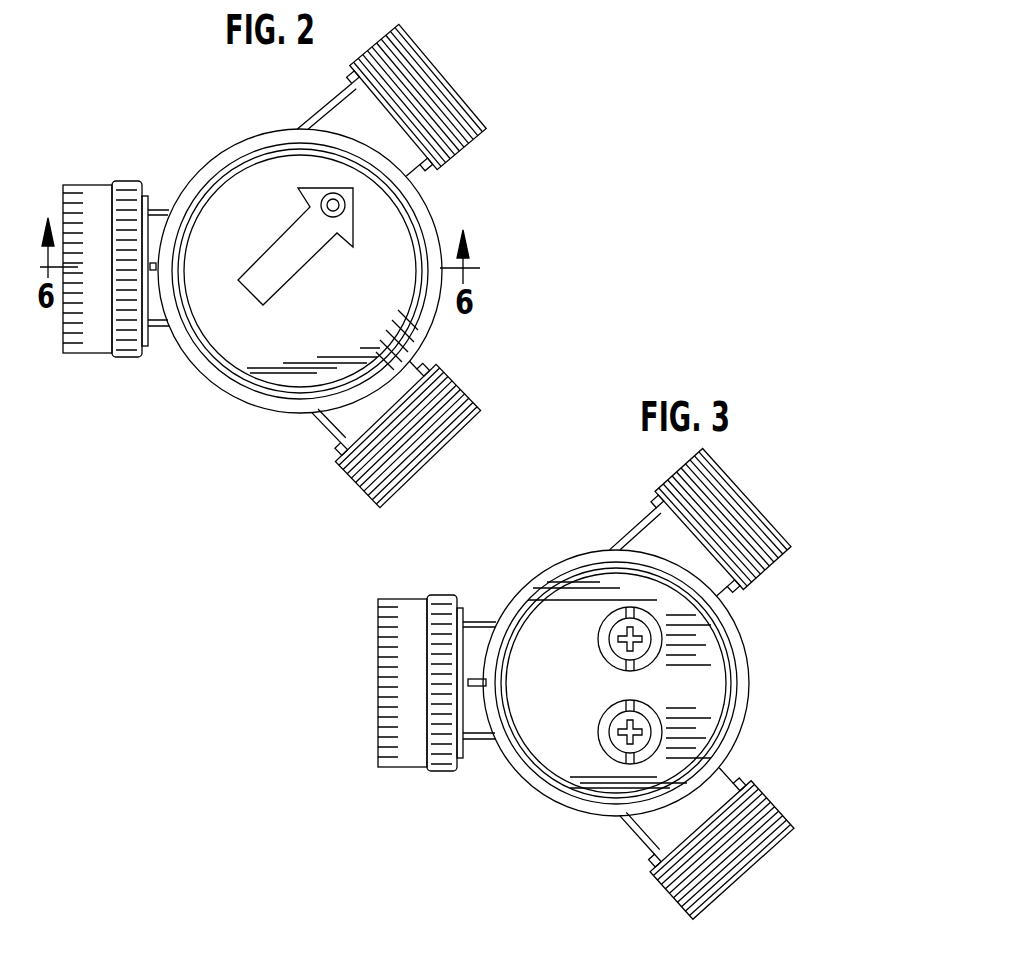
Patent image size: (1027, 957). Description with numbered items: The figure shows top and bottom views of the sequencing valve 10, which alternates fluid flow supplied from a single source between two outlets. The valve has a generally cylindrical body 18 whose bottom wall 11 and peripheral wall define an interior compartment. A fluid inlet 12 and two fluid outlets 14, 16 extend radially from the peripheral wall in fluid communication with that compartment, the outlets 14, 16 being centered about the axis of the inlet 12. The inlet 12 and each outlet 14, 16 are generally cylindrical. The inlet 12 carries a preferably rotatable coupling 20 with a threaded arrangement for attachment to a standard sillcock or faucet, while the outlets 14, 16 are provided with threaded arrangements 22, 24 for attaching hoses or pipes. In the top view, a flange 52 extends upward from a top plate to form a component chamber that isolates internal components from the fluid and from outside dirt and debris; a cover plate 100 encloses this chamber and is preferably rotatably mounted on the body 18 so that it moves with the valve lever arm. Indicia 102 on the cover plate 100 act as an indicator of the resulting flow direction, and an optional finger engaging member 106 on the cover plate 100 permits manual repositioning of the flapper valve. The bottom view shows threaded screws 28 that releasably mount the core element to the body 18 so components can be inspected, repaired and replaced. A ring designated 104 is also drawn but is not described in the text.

In FIG. 2, the sequencing valve 10 is at (177, 98).
In FIG. 3, the sequencing valve 10 is at (534, 533).
In FIG. 3, the bottom wall 11 is at (547, 753).
In FIG. 2, the fluid inlet 12 is at (155, 332).
In FIG. 3, the fluid inlet 12 is at (470, 747).
In FIG. 2, the fluid outlet 14 is at (317, 423).
In FIG. 3, the fluid outlet 14 is at (628, 540).
In FIG. 2, the fluid outlet 16 is at (327, 110).
In FIG. 3, the fluid outlet 16 is at (647, 823).
In FIG. 2, the body 18 is at (203, 167).
In FIG. 3, the body 18 is at (533, 570).
In FIG. 2, the coupling 20 is at (95, 335).
In FIG. 3, the coupling 20 is at (403, 768).
In FIG. 2, the threaded arrangement 22 is at (455, 385).
In FIG. 3, the threaded arrangement 22 is at (672, 483).
In FIG. 2, the threaded arrangement 24 is at (447, 83).
In FIG. 3, the threaded arrangement 24 is at (650, 883).
In FIG. 3, the threaded screws 28 is at (645, 640).
In FIG. 2, the flange 52 is at (190, 197).
In FIG. 2, the cover plate 100 is at (390, 228).
In FIG. 2, the indicia 102 is at (317, 257).
In FIG. 2, the dial ring 104 is at (261, 147).
In FIG. 2, the finger engaging member 106 is at (345, 196).